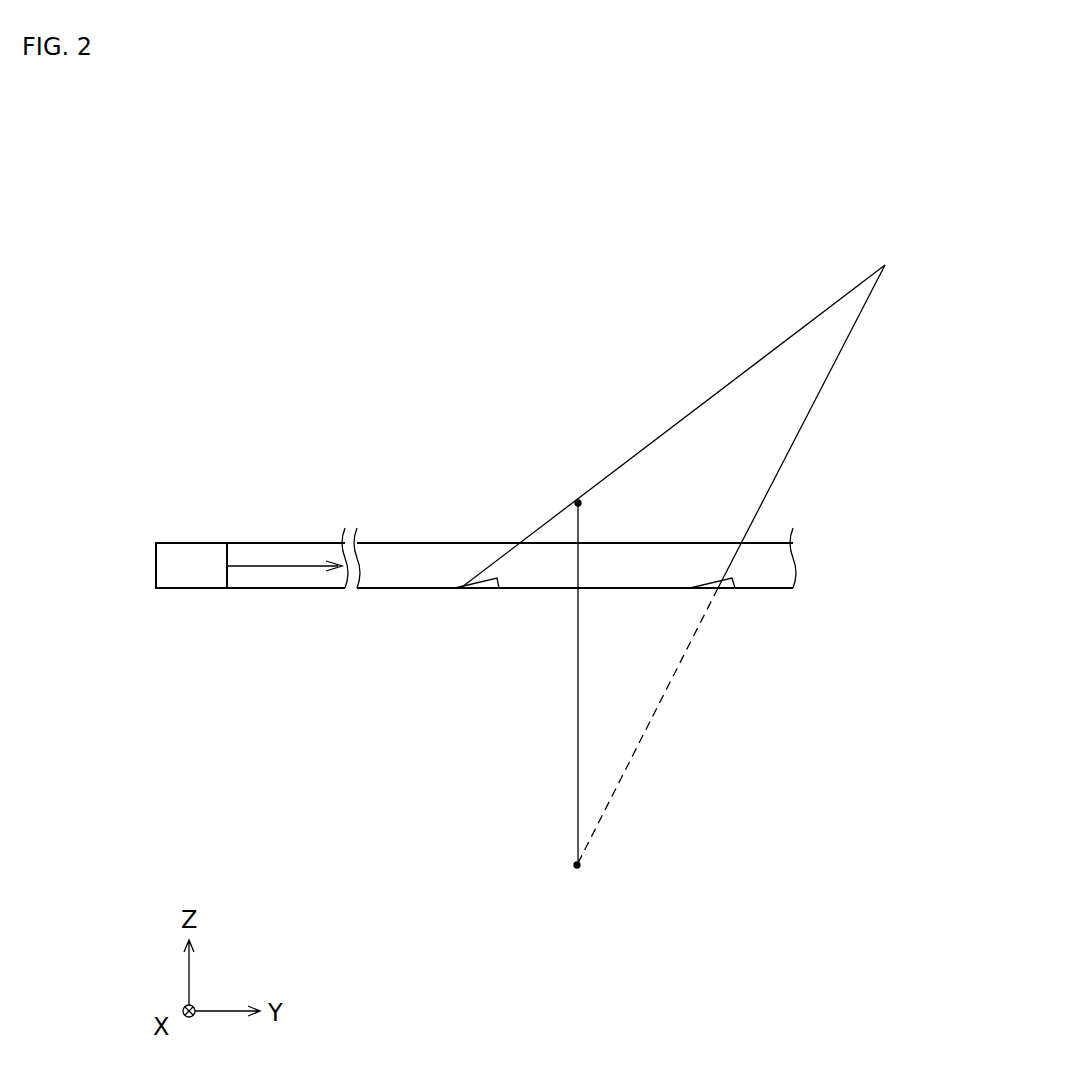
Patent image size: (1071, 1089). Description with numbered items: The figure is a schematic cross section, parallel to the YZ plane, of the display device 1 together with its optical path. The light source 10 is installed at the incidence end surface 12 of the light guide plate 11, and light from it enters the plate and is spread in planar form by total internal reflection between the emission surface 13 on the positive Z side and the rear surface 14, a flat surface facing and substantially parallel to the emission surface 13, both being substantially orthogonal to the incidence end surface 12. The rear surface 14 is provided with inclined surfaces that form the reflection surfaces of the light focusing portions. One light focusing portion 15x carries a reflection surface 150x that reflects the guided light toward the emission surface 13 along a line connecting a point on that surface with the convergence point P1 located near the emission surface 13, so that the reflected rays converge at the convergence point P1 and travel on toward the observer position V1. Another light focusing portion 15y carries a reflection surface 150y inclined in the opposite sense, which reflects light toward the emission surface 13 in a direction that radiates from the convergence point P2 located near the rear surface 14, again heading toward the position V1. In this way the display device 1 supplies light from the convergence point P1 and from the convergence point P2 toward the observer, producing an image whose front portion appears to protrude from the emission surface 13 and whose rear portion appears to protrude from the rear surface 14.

The display device 1 is at (321, 467).
The light source 10 is at (175, 590).
The light guide plate 11 is at (252, 589).
The incidence end surface 12 is at (225, 552).
The emission surface 13 is at (267, 548).
The rear surface 14 is at (288, 588).
The reflection surface 150x is at (470, 588).
The light focusing portion 15x is at (490, 589).
The reflection surface 150y is at (710, 588).
The light focusing portion 15y is at (730, 588).
The position V1 is at (907, 256).
The convergence point P1 is at (576, 501).
The convergence point P2 is at (575, 866).